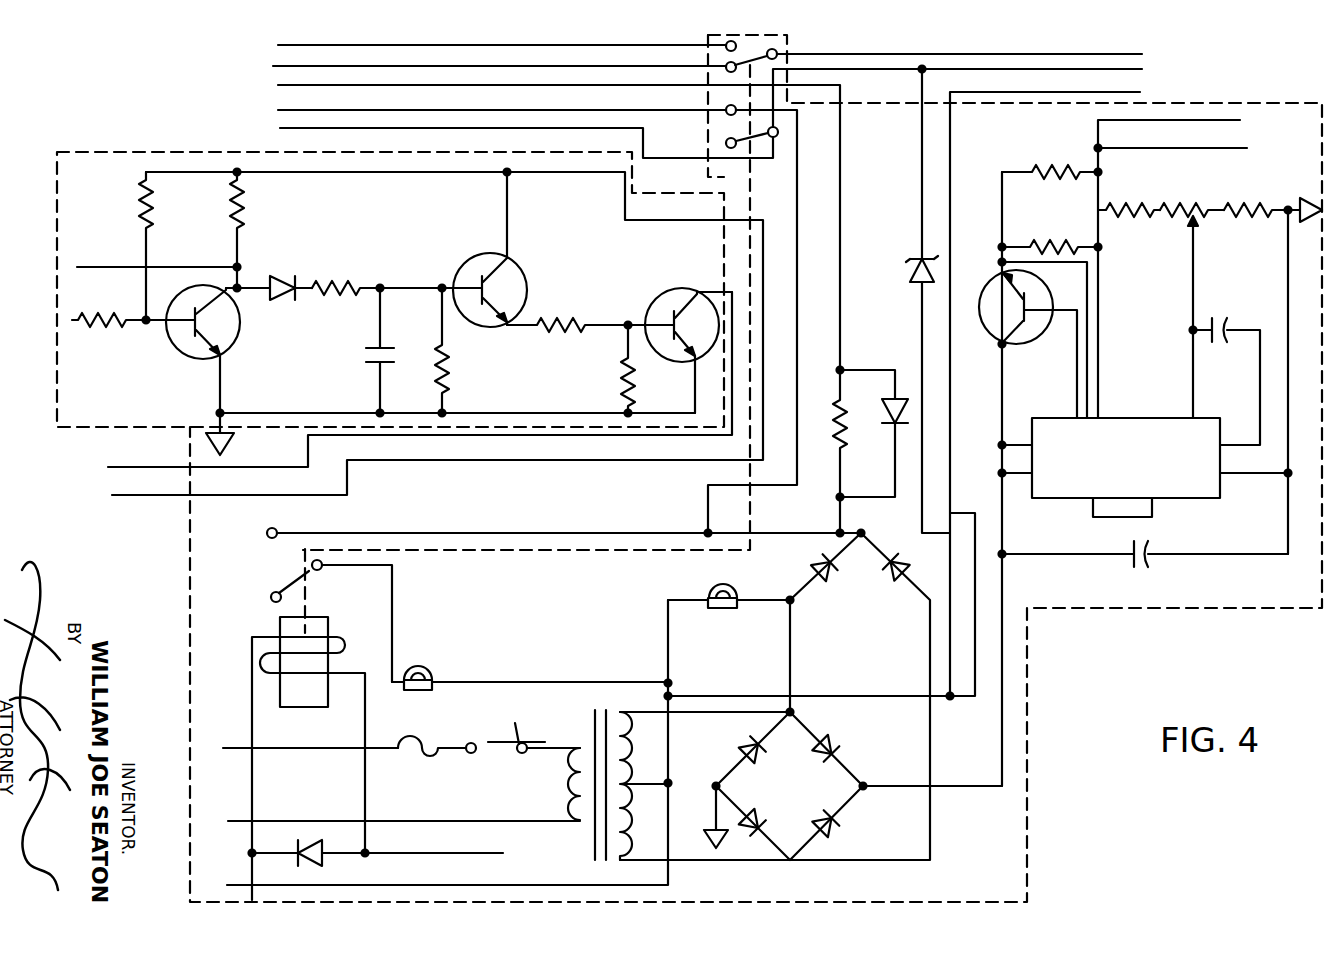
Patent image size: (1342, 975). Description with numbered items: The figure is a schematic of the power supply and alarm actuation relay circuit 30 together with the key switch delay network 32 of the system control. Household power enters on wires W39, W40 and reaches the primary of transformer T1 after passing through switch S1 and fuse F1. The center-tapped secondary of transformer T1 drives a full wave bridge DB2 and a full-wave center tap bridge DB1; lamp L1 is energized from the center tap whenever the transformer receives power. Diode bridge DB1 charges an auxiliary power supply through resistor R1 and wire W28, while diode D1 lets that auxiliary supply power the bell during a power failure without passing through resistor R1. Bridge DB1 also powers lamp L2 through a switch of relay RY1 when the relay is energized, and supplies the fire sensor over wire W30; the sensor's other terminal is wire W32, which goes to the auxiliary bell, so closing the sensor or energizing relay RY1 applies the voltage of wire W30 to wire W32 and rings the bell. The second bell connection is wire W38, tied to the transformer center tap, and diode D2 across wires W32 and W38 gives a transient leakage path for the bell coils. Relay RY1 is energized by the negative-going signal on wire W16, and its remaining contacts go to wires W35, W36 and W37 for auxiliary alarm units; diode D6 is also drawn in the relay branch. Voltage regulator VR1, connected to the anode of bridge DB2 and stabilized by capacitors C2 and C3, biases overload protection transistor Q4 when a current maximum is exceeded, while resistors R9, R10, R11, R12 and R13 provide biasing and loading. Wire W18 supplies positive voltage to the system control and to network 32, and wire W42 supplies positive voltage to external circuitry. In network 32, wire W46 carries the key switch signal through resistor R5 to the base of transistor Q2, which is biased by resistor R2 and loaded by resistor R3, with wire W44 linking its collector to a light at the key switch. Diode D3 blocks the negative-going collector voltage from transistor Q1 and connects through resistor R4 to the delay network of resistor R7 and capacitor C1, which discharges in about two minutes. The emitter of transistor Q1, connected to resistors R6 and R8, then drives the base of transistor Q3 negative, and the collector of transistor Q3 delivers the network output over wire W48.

The wire W35 is at (276, 45).
The wire W36 is at (272, 66).
The wire W37 is at (1105, 55).
The wire W28 is at (276, 85).
The wire W30 is at (278, 110).
The wire W32 is at (276, 128).
The wire W38 is at (1140, 92).
The wire W42 is at (1188, 120).
The wire W18 is at (144, 497).
The wire W44 is at (100, 247).
The wire W46 is at (76, 323).
The wire W48 is at (152, 466).
The wire W39 is at (350, 748).
The wire W40 is at (262, 818).
The wire W16 is at (475, 853).
The key switch delay network 32 is at (128, 428).
The power supply and alarm actuation relay circuit 30 is at (188, 618).
The resistor R1 is at (834, 420).
The resistor R2 is at (142, 218).
The resistor R3 is at (242, 208).
The resistor R4 is at (346, 279).
The resistor R5 is at (106, 310).
The resistor R6 is at (555, 322).
The resistor R7 is at (447, 372).
The resistor R8 is at (624, 369).
The resistor R9 is at (1042, 242).
The resistor R10 is at (1046, 168).
The resistor R11 is at (1128, 210).
The resistor R12 is at (1188, 210).
The resistor R13 is at (1248, 210).
The capacitor C1 is at (365, 362).
The capacitor C2 is at (1147, 549).
The capacitor C3 is at (1216, 323).
The diode D1 is at (876, 416).
The diode D2 is at (910, 265).
The diode D3 is at (282, 274).
The diode D6 is at (322, 858).
The transistor Q1 is at (518, 278).
The transistor Q2 is at (238, 337).
The transistor Q3 is at (689, 294).
The overload protection transistor Q4 is at (1035, 344).
The voltage regulator VR1 is at (1145, 467).
The full-wave center tap bridge DB1 is at (888, 574).
The full wave bridge DB2 is at (811, 785).
The lamp L1 is at (706, 596).
The lamp L2 is at (425, 668).
The relay RY1 is at (302, 707).
The fuse F1 is at (420, 743).
The switch S1 is at (508, 744).
The transformer T1 is at (592, 733).